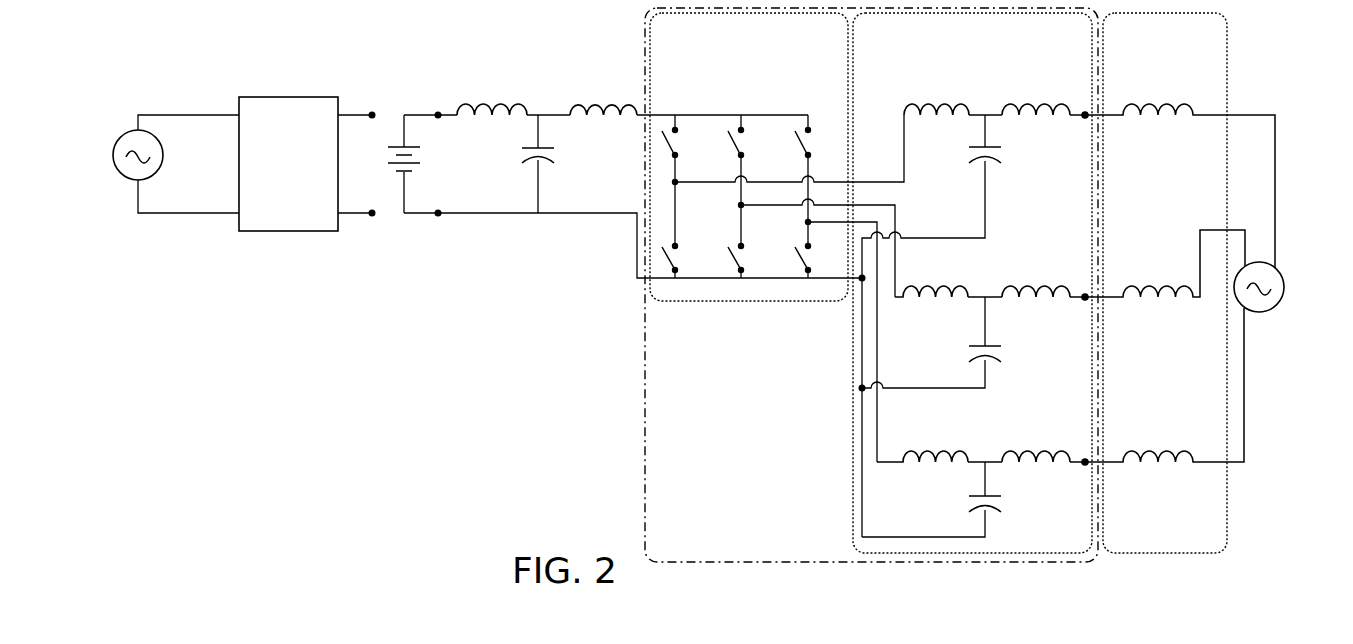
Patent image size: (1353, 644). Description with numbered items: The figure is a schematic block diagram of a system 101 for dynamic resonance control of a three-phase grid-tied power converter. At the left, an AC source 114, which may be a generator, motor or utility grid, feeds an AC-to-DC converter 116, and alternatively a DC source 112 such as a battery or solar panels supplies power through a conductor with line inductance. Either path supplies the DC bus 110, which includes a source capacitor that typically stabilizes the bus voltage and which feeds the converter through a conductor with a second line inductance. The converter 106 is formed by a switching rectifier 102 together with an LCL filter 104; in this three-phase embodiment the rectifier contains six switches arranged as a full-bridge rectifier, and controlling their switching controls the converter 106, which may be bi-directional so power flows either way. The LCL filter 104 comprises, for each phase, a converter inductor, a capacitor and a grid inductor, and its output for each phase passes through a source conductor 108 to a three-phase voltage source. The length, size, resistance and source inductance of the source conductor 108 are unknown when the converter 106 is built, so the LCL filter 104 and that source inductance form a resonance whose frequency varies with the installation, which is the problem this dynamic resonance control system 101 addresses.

The system 101 is at (212, 80).
The switching rectifier 102 is at (777, 237).
The LCL filter 104 is at (978, 283).
The converter 106 is at (745, 285).
The source conductor 108 is at (1189, 283).
The DC bus 110 is at (547, 113).
The DC source 112 is at (463, 164).
The AC source 114 is at (176, 164).
The AC-to-DC converter 116 is at (307, 164).